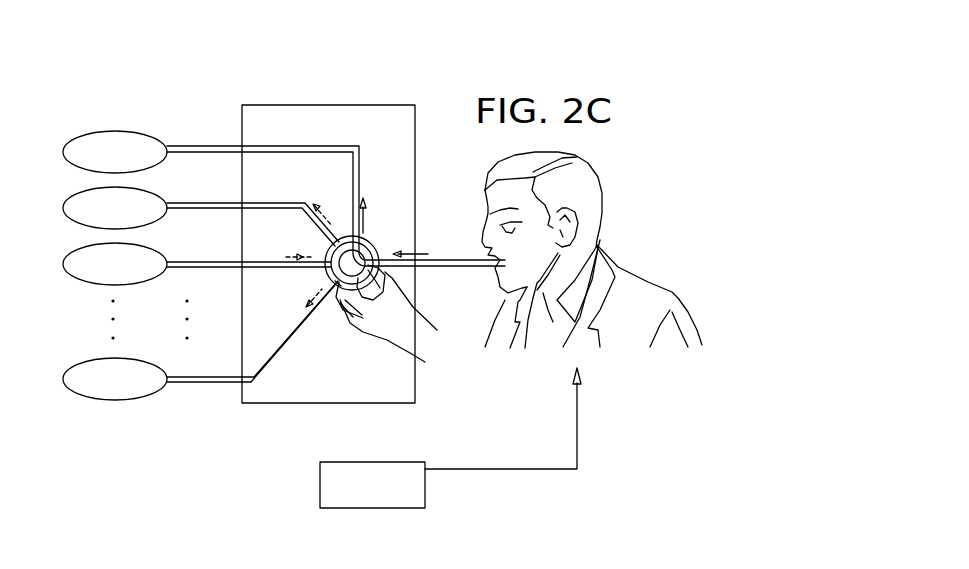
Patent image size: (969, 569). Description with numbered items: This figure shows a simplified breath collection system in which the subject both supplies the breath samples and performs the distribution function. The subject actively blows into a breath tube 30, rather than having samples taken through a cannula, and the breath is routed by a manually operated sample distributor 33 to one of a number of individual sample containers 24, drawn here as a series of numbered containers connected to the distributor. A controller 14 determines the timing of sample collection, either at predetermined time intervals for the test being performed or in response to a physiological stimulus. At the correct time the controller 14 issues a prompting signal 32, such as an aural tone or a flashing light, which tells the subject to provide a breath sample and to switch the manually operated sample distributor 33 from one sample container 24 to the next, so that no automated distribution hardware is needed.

The sample containers 24 is at (130, 131).
The manually operated sample distributor 33 is at (290, 105).
The breath tube 30 is at (457, 260).
The controller 14 is at (390, 462).
The prompting signal 32 is at (578, 414).